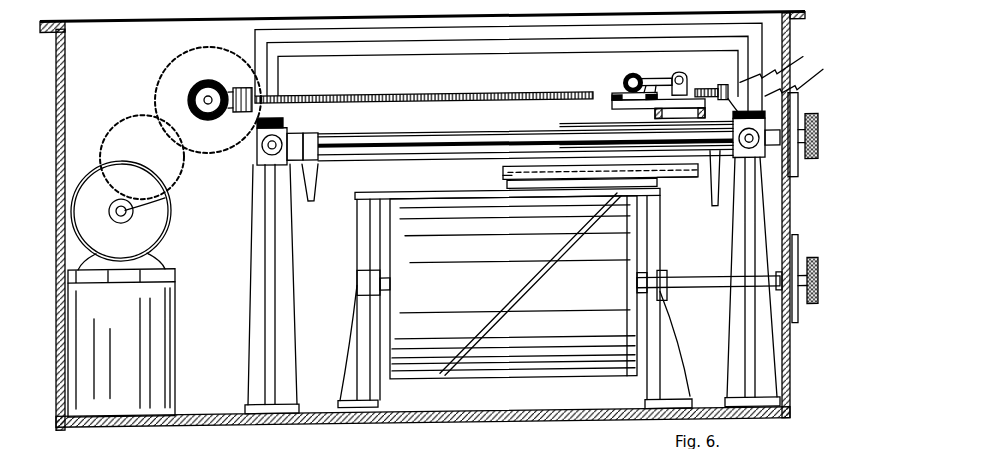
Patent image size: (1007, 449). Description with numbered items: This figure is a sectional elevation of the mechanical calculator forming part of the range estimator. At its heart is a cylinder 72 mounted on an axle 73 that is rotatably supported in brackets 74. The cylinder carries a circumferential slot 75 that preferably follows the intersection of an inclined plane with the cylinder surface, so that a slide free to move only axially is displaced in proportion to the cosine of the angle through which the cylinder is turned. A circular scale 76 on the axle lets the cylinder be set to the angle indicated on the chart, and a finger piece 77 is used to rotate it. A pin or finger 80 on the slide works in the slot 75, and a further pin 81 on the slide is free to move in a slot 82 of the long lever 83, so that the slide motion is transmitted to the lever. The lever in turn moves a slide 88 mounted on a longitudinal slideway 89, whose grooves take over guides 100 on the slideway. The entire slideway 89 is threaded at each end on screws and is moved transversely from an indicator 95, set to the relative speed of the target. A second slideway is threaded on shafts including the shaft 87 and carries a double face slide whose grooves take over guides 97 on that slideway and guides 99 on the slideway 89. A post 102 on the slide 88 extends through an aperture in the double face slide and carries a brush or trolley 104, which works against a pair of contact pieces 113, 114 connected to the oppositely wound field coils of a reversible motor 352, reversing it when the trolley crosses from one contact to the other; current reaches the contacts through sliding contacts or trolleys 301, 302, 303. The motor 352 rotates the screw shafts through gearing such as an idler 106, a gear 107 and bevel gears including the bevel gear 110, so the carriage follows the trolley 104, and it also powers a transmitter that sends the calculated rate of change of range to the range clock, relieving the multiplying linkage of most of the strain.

The cylinder 72 is at (513, 287).
The axle 73 is at (702, 296).
The brackets 74 is at (356, 350).
The circumferential slot 75 is at (546, 276).
The circular scale 76 is at (795, 333).
The finger piece 77 is at (812, 268).
The pin or finger 80 is at (697, 184).
The pin 81 is at (606, 173).
The slot 82 is at (550, 210).
The long lever 83 is at (503, 179).
The shaft 87 is at (492, 98).
The slide 88 is at (658, 156).
The longitudinal slideway 89 is at (460, 136).
The indicator 95 is at (650, 119).
The guides 97 is at (703, 195).
The guides 99 is at (534, 137).
The guides 100 is at (325, 265).
The post 102 is at (700, 94).
The brush or trolley 104 is at (626, 85).
The idler 106 is at (178, 166).
The gear 107 is at (200, 60).
The bevel gear 110 is at (218, 86).
The contact piece 113 is at (658, 86).
The contact piece 114 is at (612, 97).
The sliding contact or trolley 301 is at (578, 62).
The sliding contact or trolley 302 is at (690, 30).
The sliding contact or trolley 303 is at (708, 64).
The reversible motor 352 is at (171, 215).